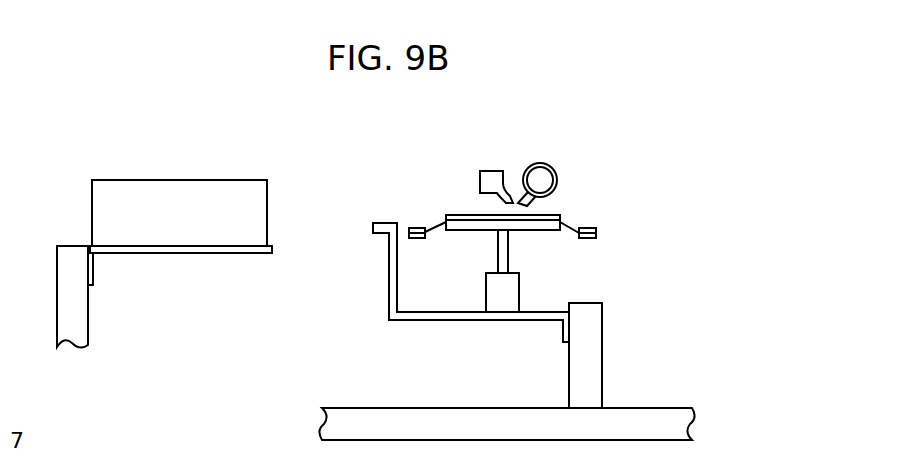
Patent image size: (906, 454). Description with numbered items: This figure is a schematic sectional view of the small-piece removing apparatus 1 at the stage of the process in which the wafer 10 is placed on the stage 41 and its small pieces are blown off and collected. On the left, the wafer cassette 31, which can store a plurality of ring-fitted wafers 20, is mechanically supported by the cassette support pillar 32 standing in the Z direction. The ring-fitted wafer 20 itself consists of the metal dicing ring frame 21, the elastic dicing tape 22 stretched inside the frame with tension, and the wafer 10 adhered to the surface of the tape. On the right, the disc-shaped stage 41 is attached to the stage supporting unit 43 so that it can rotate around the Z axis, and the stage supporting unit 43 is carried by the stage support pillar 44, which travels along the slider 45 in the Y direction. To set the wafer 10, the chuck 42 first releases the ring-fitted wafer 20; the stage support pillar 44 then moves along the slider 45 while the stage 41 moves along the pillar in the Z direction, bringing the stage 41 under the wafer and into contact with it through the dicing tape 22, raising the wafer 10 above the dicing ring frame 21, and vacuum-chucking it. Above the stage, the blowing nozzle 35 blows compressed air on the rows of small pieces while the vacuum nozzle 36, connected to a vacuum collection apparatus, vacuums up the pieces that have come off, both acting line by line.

The small-piece removing apparatus 1 is at (650, 99).
The wafer 10 is at (467, 215).
The ring-fitted wafer 20 is at (612, 214).
The dicing ring frame 21 is at (585, 238).
The elastic dicing tape 22 is at (570, 223).
The wafer cassette 31 is at (182, 192).
The cassette support pillar 32 is at (72, 258).
The blowing nozzle 35 is at (495, 170).
The vacuum nozzle 36 is at (540, 164).
The stage 41 is at (542, 230).
The chuck 42 is at (388, 223).
The stage supporting unit 43 is at (497, 292).
The stage support pillar 44 is at (592, 318).
The slider 45 is at (653, 418).